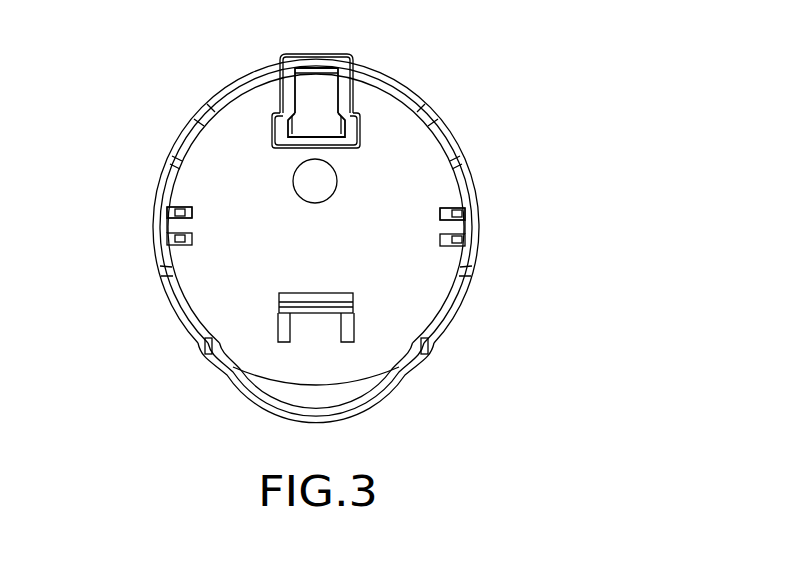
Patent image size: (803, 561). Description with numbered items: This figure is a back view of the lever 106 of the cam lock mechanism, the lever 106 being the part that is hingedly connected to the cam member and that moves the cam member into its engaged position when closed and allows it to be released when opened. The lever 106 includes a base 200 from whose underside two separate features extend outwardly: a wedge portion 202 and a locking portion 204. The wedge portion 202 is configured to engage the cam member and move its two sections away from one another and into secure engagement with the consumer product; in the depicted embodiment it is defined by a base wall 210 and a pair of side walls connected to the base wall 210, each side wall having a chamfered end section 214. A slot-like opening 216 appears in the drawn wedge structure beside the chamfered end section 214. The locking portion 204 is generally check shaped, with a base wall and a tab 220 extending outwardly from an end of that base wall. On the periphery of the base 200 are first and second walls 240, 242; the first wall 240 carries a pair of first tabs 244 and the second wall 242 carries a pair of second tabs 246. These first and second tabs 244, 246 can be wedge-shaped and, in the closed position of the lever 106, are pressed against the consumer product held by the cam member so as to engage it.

The lever 106 is at (560, 197).
The base 200 is at (397, 118).
The wedge portion 202 is at (273, 165).
The locking portion 204 is at (370, 303).
The base wall 210 is at (337, 149).
The chamfered end section 214 is at (358, 130).
The slot opening 216 is at (274, 128).
The tab 220 is at (307, 293).
The first wall 240 is at (163, 230).
The second wall 242 is at (476, 224).
The first tab 244 is at (166, 209).
The second tab 246 is at (447, 209).